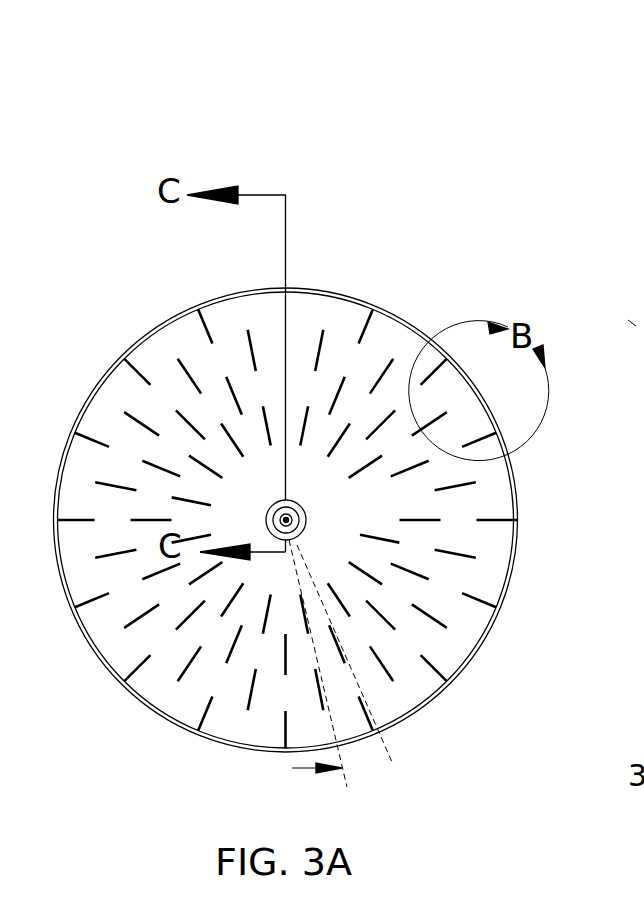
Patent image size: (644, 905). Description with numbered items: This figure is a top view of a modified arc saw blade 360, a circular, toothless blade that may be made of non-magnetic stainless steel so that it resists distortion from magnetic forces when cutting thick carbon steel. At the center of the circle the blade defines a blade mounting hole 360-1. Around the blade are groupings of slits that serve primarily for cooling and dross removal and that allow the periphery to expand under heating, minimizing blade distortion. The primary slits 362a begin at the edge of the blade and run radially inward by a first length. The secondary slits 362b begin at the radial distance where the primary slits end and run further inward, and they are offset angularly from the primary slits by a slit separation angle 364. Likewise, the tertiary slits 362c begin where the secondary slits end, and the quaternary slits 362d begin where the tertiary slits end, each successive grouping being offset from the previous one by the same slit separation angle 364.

The modified arc saw blade 360 is at (327, 182).
The blade mounting hole 360-1 is at (294, 503).
The primary slits 362a is at (540, 517).
The secondary slits 362b is at (480, 486).
The tertiary slits 362c is at (467, 522).
The quaternary slits 362d is at (426, 548).
The slit separation angle 364 is at (400, 749).